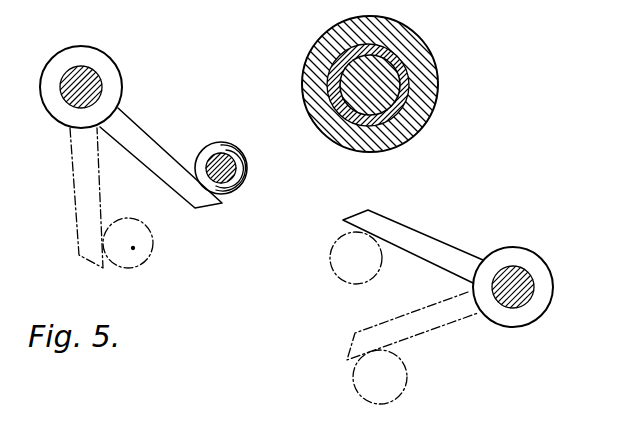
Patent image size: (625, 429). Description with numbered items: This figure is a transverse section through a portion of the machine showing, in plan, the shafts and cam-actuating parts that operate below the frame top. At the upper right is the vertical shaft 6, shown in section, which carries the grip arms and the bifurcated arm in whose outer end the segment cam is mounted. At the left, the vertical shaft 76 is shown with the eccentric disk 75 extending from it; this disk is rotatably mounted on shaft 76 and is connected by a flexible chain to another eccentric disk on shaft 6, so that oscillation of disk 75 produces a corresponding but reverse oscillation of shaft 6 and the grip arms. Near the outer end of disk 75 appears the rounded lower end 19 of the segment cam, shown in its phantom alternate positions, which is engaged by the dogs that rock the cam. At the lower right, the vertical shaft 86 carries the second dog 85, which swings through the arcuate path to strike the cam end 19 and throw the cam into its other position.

The vertical shaft 6 is at (393, 62).
The arm of cam 19 is at (225, 145).
The eccentric disk 75 is at (150, 145).
The vertical shaft 76 is at (95, 75).
The dog 85 is at (437, 248).
The vertical shaft 86 is at (527, 278).